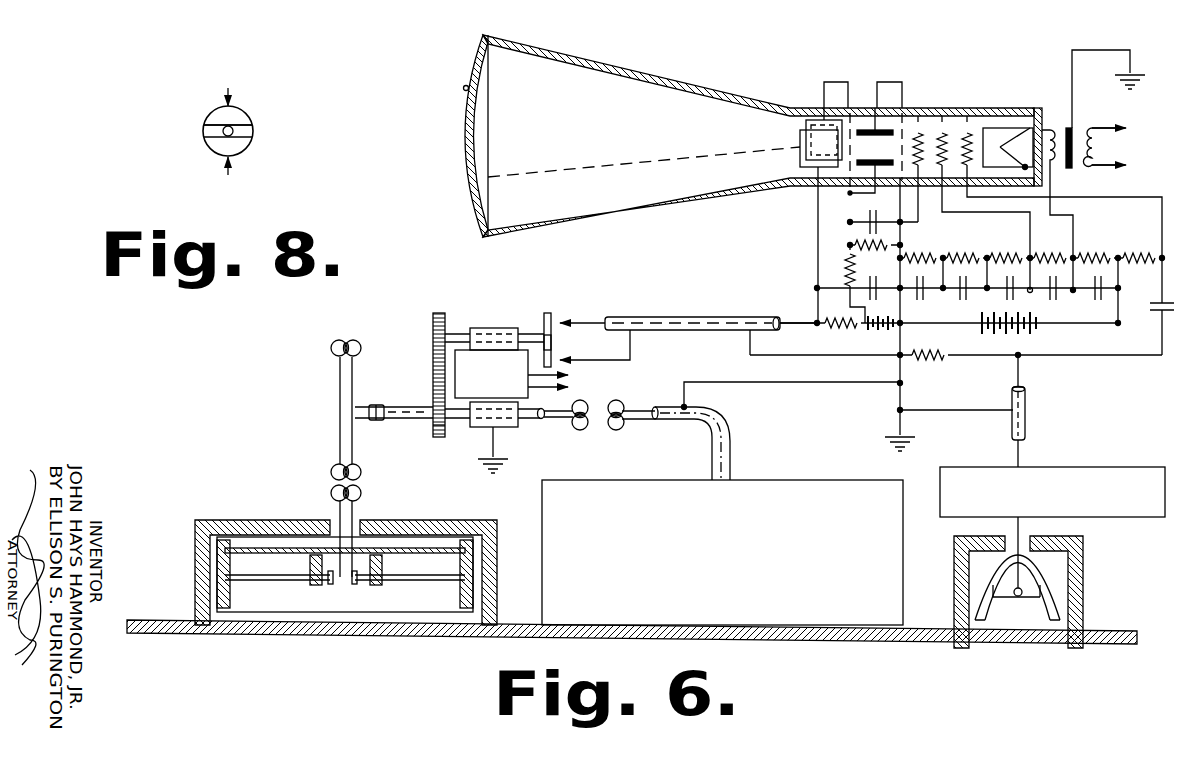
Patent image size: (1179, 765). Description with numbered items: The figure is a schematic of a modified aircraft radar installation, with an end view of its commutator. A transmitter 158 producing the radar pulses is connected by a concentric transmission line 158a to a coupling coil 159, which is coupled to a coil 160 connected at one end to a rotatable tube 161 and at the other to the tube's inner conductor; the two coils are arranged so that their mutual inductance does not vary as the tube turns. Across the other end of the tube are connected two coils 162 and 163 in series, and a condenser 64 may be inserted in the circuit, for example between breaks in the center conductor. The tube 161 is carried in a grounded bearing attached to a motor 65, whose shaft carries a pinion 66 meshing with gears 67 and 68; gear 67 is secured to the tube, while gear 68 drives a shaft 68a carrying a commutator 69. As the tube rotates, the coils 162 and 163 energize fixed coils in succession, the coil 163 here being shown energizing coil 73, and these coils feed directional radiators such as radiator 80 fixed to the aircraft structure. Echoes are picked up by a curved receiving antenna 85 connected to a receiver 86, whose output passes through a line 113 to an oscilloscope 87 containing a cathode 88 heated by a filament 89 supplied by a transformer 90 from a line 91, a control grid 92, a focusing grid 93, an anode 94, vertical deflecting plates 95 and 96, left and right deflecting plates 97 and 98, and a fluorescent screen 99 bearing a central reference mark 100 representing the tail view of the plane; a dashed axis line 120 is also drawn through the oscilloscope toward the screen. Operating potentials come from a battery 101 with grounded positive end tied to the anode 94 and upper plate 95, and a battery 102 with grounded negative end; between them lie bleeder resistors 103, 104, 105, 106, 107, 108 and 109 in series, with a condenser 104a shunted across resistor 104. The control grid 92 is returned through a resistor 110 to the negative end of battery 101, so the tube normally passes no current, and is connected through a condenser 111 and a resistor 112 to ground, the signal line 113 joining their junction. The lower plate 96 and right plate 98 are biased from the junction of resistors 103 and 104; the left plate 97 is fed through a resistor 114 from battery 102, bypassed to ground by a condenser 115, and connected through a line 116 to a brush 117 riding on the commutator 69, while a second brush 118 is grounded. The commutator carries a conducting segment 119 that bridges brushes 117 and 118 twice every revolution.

In FIG. 6, the condenser 64 is at (378, 406).
In FIG. 6, the motor 65 is at (544, 328).
In FIG. 6, the pinion 66 is at (455, 378).
In FIG. 6, the gear 67 is at (435, 432).
In FIG. 6, the gear 68 is at (433, 326).
In FIG. 6, the shaft 68a is at (470, 328).
In FIG. 8, the commutator 69 is at (252, 142).
In FIG. 6, the commutator 69 is at (547, 313).
In FIG. 6, the coil 73 is at (362, 494).
In FIG. 6, the directional radiator 80 is at (346, 572).
In FIG. 6, the receiving antenna 85 is at (1018, 582).
In FIG. 6, the receiver 86 is at (1068, 468).
In FIG. 6, the oscilloscope 87 is at (692, 78).
In FIG. 6, the cathode 88 is at (998, 128).
In FIG. 6, the filament 89 is at (1025, 165).
In FIG. 6, the transformer 90 is at (1093, 170).
In FIG. 6, the line 91 is at (1104, 147).
In FIG. 6, the control grid 92 is at (967, 120).
In FIG. 6, the focusing grid 93 is at (942, 120).
In FIG. 6, the anode 94 is at (918, 120).
In FIG. 6, the upper deflecting plate 95 is at (870, 130).
In FIG. 6, the lower deflecting plate 96 is at (878, 168).
In FIG. 6, the left deflecting plate 97 is at (800, 151).
In FIG. 6, the right deflecting plate 98 is at (806, 123).
In FIG. 6, the fluorescent screen 99 is at (467, 133).
In FIG. 6, the reference mark 100 is at (462, 88).
In FIG. 6, the battery 101 is at (1030, 335).
In FIG. 6, the battery 102 is at (879, 331).
In FIG. 6, the bleeder resistor 103 is at (845, 257).
In FIG. 6, the bleeder resistor 104 is at (875, 258).
In FIG. 6, the condenser 104a is at (902, 222).
In FIG. 6, the bleeder resistor 105 is at (910, 254).
In FIG. 6, the bleeder resistor 106 is at (954, 254).
In FIG. 6, the bleeder resistor 107 is at (998, 254).
In FIG. 6, the bleeder resistor 108 is at (1042, 254).
In FIG. 6, the bleeder resistor 109 is at (1086, 254).
In FIG. 6, the resistor 110 is at (1130, 254).
In FIG. 6, the condenser 111 is at (1156, 306).
In FIG. 6, the resistor 112 is at (920, 360).
In FIG. 6, the line 113 is at (1027, 409).
In FIG. 6, the resistor 114 is at (834, 328).
In FIG. 6, the condenser 115 is at (876, 296).
In FIG. 6, the line 116 is at (670, 317).
In FIG. 8, the brush 117 is at (230, 98).
In FIG. 6, the brush 117 is at (565, 320).
In FIG. 8, the brush 118 is at (232, 166).
In FIG. 6, the brush 118 is at (576, 361).
In FIG. 8, the conducting segment 119 is at (204, 128).
In FIG. 6, the conducting segment 119 is at (553, 344).
In FIG. 6, the axis 120 is at (478, 180).
In FIG. 6, the transmitter 158 is at (790, 480).
In FIG. 6, the concentric transmission line 158a is at (731, 432).
In FIG. 6, the coupling coil 159 is at (617, 428).
In FIG. 6, the coil 160 is at (580, 428).
In FIG. 6, the rotatable tube 161 is at (522, 427).
In FIG. 6, the coil 162 is at (330, 349).
In FIG. 6, the coil 163 is at (330, 473).